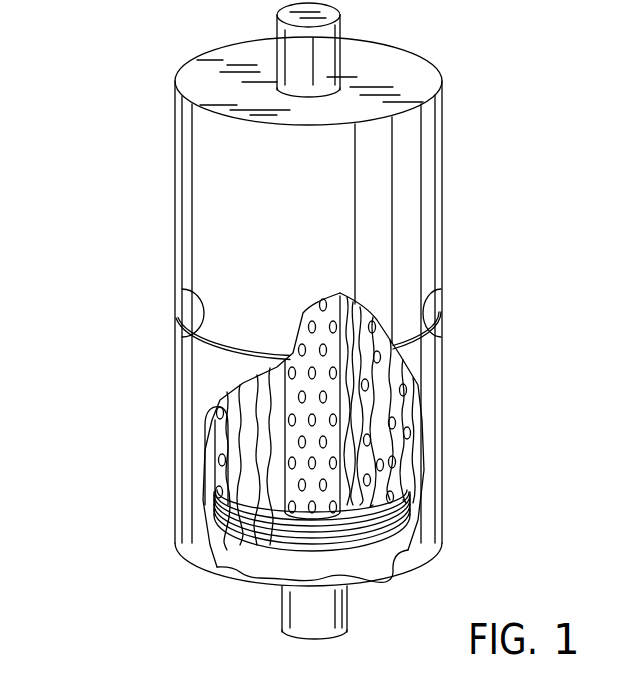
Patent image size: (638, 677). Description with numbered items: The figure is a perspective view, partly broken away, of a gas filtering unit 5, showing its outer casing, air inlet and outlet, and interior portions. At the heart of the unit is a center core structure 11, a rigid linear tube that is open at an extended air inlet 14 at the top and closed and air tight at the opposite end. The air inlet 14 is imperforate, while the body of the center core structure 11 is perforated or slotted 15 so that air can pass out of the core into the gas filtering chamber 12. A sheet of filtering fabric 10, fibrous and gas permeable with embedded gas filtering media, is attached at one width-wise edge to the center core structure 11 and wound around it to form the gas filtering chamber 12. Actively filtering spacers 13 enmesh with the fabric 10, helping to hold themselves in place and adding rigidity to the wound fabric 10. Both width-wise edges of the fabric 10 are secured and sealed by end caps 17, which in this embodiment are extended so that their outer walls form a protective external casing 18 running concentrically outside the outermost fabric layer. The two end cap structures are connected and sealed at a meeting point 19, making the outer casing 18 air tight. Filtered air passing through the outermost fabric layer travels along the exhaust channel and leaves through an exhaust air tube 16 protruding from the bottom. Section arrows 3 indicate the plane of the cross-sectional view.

The section line 3- 3 is at (218, 370).
The gas filtering unit 5 is at (118, 164).
The filtering fabric 10 is at (400, 513).
The center core structure 11 is at (345, 497).
The gas filtering chamber 12 is at (217, 445).
The actively filtering spacers 13 is at (292, 463).
The air inlet 14 is at (340, 24).
The perforations or slots 15 is at (225, 480).
The exhaust air tube 16 is at (338, 633).
The end caps 17 is at (430, 73).
The outer casing 18 is at (427, 173).
The meeting point 19 is at (192, 302).